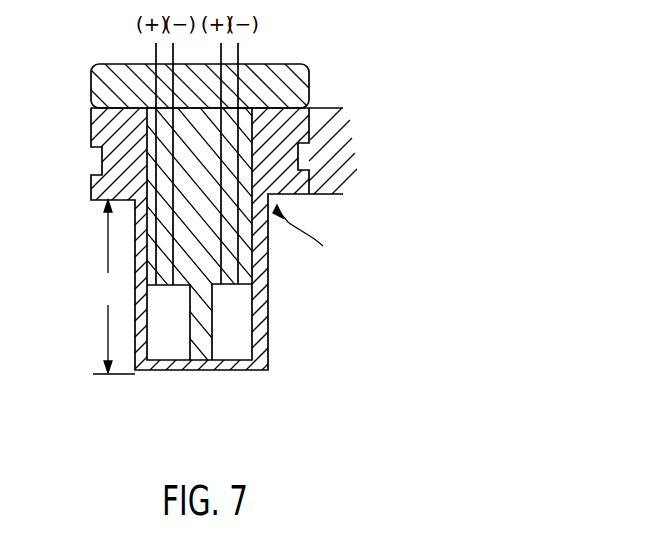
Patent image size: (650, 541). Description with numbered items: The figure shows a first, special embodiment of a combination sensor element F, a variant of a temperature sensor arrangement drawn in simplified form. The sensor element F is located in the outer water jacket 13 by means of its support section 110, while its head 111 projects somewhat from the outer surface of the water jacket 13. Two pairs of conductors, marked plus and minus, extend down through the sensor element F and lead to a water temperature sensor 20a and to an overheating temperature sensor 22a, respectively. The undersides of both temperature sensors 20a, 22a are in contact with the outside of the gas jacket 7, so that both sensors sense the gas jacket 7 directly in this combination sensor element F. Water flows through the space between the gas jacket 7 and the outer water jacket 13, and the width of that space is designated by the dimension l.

The gas jacket 7 is at (325, 270).
The head 111 is at (285, 77).
The support section 110 is at (70, 110).
The outer water jacket 13 is at (389, 160).
The water temperature sensor 20a is at (175, 348).
The overheating temperature sensor 22a is at (240, 343).
The combination sensor element F is at (308, 235).
The width of the space between the jackets l is at (110, 304).